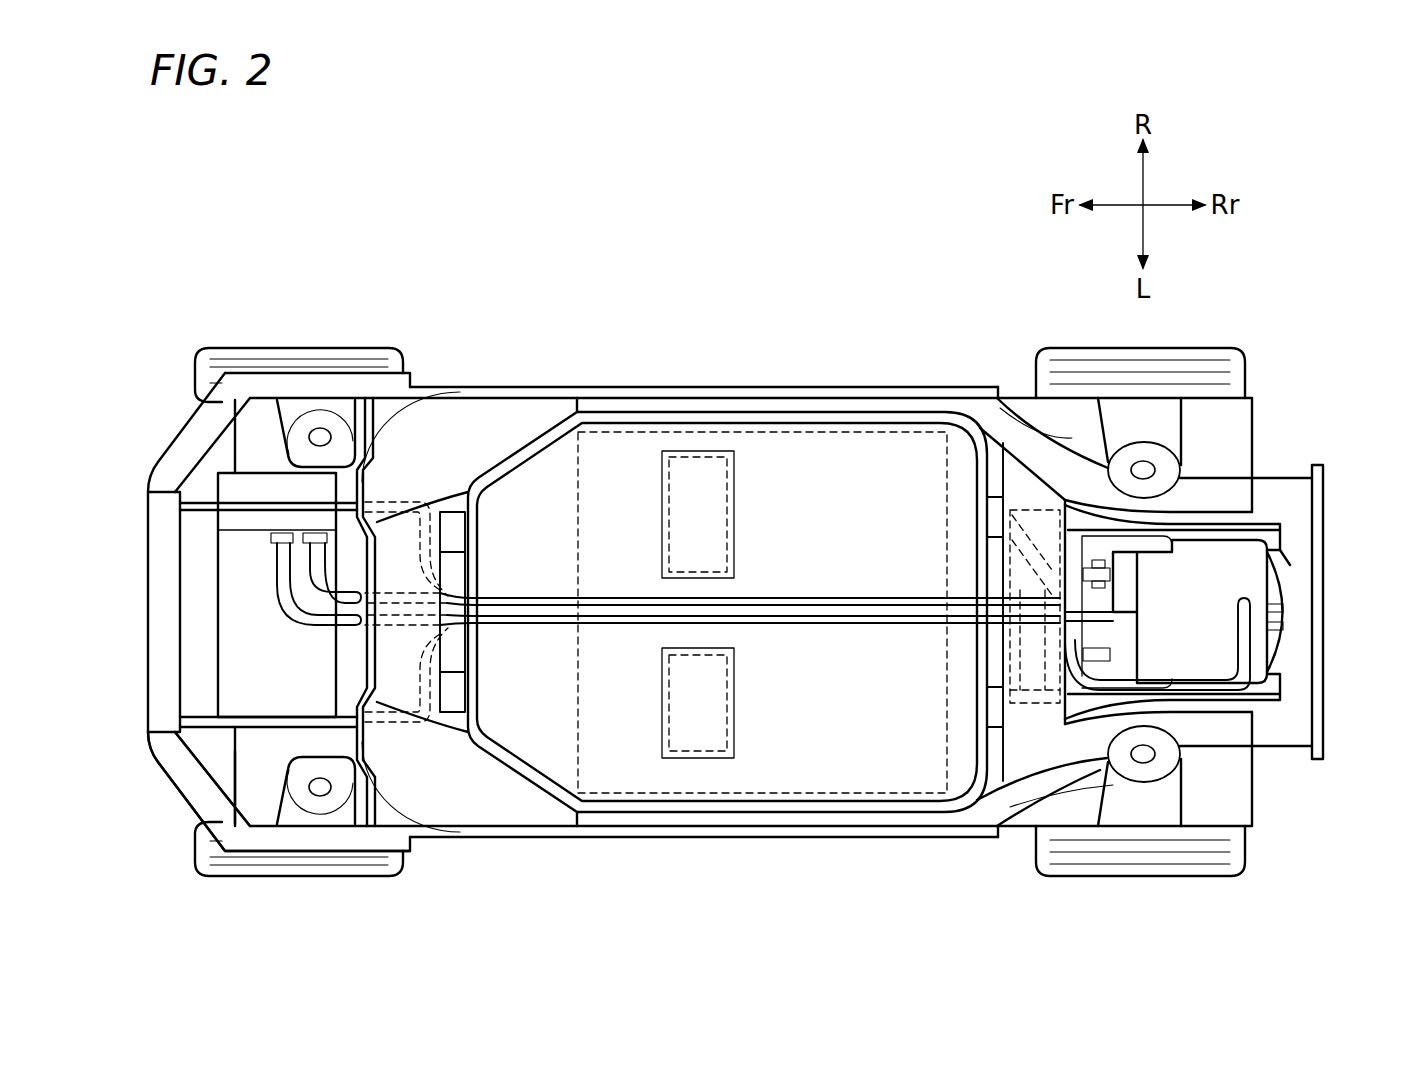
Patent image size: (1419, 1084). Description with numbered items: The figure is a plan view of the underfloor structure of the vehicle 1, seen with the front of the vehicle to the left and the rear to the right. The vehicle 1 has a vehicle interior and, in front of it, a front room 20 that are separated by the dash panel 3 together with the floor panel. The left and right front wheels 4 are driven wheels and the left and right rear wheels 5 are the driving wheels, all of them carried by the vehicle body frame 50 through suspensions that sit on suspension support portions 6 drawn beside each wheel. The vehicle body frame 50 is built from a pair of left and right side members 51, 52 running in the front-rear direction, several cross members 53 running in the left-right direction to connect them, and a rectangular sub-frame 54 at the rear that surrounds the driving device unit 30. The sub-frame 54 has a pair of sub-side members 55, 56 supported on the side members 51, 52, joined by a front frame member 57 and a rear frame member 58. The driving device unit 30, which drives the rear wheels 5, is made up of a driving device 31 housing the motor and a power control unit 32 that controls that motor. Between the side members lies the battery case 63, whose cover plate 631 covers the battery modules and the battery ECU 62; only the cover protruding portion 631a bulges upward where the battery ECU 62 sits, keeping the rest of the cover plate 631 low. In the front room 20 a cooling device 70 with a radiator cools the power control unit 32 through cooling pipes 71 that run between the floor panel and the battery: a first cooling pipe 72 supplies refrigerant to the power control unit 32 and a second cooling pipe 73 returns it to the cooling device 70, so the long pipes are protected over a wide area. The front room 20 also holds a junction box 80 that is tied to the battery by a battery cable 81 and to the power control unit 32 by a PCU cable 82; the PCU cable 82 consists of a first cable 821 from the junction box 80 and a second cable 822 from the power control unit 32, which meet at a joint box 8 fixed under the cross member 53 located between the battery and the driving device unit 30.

The vehicle 1 is at (792, 288).
The dash panel 3 is at (400, 553).
The front wheels 4 is at (335, 346).
The rear wheels 5 is at (1180, 347).
The suspension support portions 6 is at (259, 444).
The joint box 8 is at (1030, 705).
The front room 20 is at (212, 634).
The driving device unit 30 is at (1365, 567).
The driving device 31 is at (1267, 655).
The power control unit (PCU) 32 is at (1270, 573).
The vehicle body frame 50 is at (870, 382).
The side member 51 is at (800, 387).
The side member 52 is at (825, 838).
The cross members 53 is at (422, 515).
The sub-frame 54 is at (1297, 561).
The sub-side member 55 is at (1272, 537).
The sub-side member 56 is at (1314, 703).
The front frame member 57 is at (1067, 722).
The rear frame member 58 is at (1275, 690).
The battery ECU 62 is at (680, 457).
The battery case 63 is at (690, 412).
The cover plate 631 is at (897, 760).
The cover protruding portion 631a is at (660, 476).
The cooling device 70 is at (150, 620).
The cooling pipes 71 is at (748, 536).
The first cooling pipe 72 is at (812, 616).
The second cooling pipe 73 is at (757, 598).
The junction box 80 is at (235, 570).
The battery cable 81 is at (290, 603).
The PCU cable 82 is at (345, 605).
The first cable 821 is at (880, 606).
The second cable 822 is at (1252, 700).